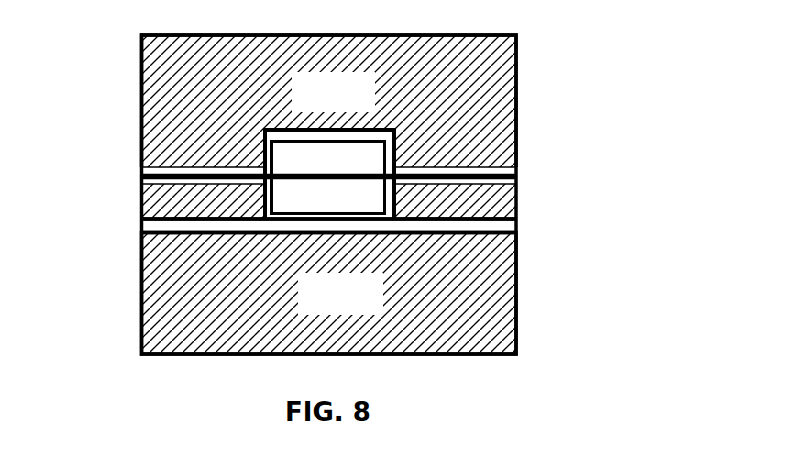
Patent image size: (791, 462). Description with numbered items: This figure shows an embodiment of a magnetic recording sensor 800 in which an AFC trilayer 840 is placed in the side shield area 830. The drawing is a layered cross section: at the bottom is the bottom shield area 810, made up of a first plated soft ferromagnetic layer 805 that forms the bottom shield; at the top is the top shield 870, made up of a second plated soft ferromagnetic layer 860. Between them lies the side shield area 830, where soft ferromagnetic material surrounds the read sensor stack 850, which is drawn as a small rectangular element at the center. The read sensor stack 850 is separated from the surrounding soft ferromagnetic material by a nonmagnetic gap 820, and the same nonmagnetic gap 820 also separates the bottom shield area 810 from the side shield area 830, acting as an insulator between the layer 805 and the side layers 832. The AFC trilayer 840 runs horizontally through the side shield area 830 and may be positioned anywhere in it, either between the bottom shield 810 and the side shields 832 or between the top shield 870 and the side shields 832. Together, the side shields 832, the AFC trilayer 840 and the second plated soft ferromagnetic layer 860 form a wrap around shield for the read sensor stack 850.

The magnetic recording sensor 800 is at (673, 27).
The first plated soft ferromagnetic layer 805 is at (329, 294).
The bottom shield area 810 is at (538, 350).
The nonmagnetic gap 820 is at (261, 203).
The side shield area 830 is at (583, 223).
The side shields 832 is at (374, 218).
The AFC trilayer 840 is at (273, 168).
The read sensor stack 850 is at (205, 151).
The second plated soft ferromagnetic layer 860 is at (329, 101).
The top shield 870 is at (540, 33).